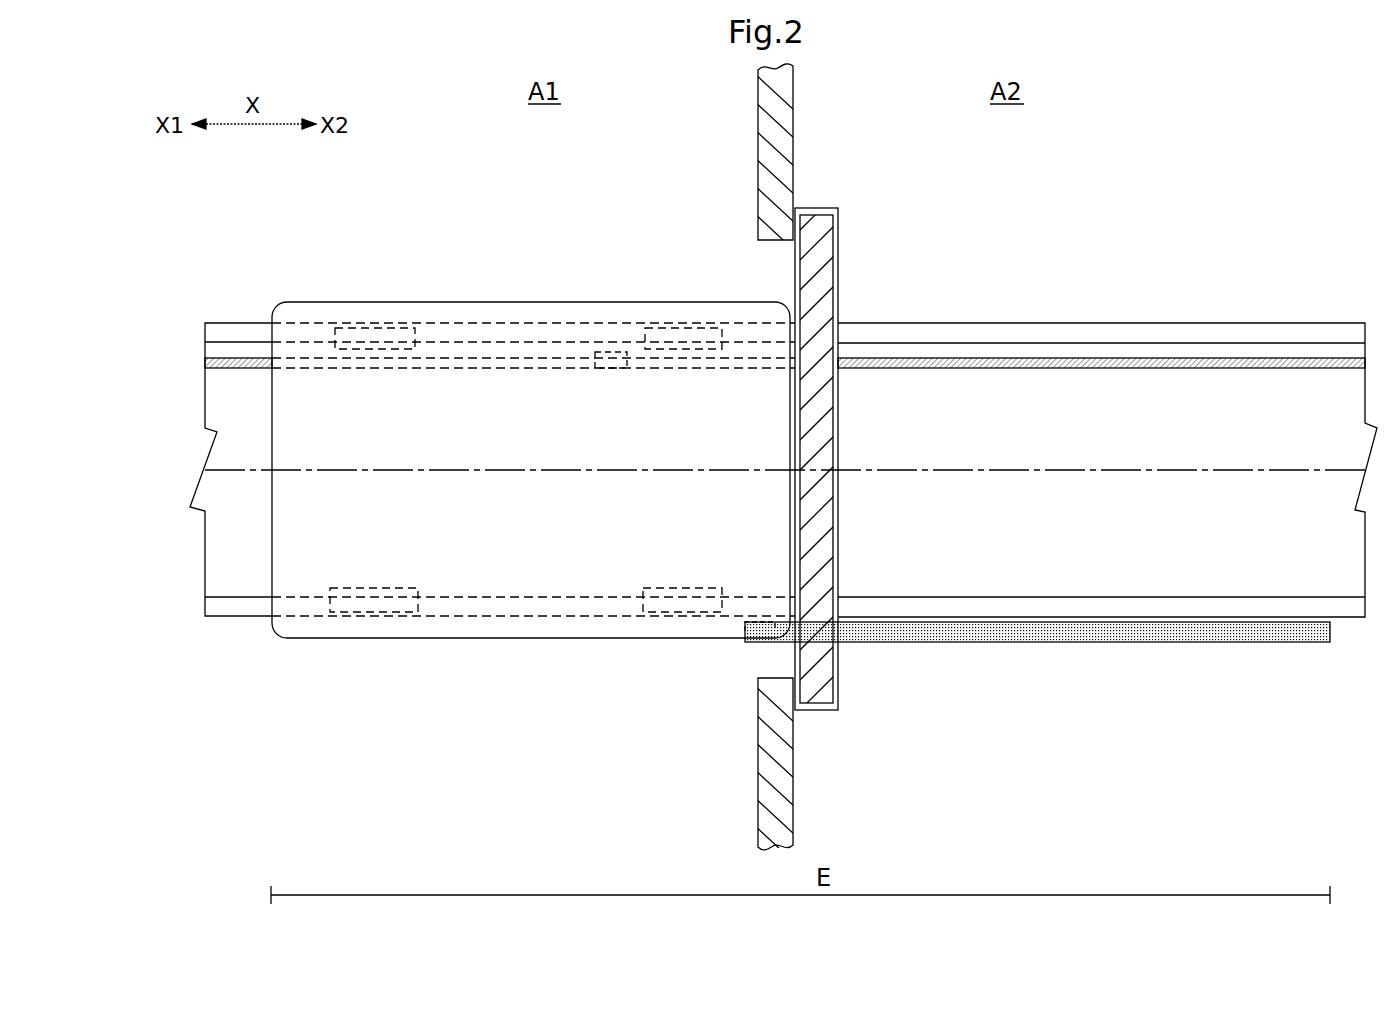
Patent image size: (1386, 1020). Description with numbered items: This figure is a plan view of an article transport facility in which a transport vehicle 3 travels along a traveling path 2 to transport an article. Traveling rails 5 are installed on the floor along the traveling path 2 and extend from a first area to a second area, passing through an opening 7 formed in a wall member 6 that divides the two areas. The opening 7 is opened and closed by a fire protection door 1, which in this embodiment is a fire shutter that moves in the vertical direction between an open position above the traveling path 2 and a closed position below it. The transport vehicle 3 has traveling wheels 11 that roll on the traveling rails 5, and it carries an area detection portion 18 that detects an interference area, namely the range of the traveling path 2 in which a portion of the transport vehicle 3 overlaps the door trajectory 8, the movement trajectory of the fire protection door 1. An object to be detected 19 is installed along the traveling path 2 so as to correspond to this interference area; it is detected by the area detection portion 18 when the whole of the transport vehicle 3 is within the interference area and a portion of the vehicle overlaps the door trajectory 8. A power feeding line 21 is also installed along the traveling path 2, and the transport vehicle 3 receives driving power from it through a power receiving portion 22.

The fire protection door 1 is at (838, 236).
The traveling path 2 is at (1258, 470).
The transport vehicle 3 is at (570, 290).
The traveling rails 5 is at (255, 323).
The wall member 6 is at (795, 132).
The opening 7 is at (766, 259).
The door trajectory 8 is at (838, 310).
The traveling wheels 11 is at (400, 330).
The area detection portion 18 is at (745, 641).
The object to be detected 19 is at (1122, 632).
The power feeding line 21 is at (488, 368).
The power receiving portion 22 is at (615, 370).